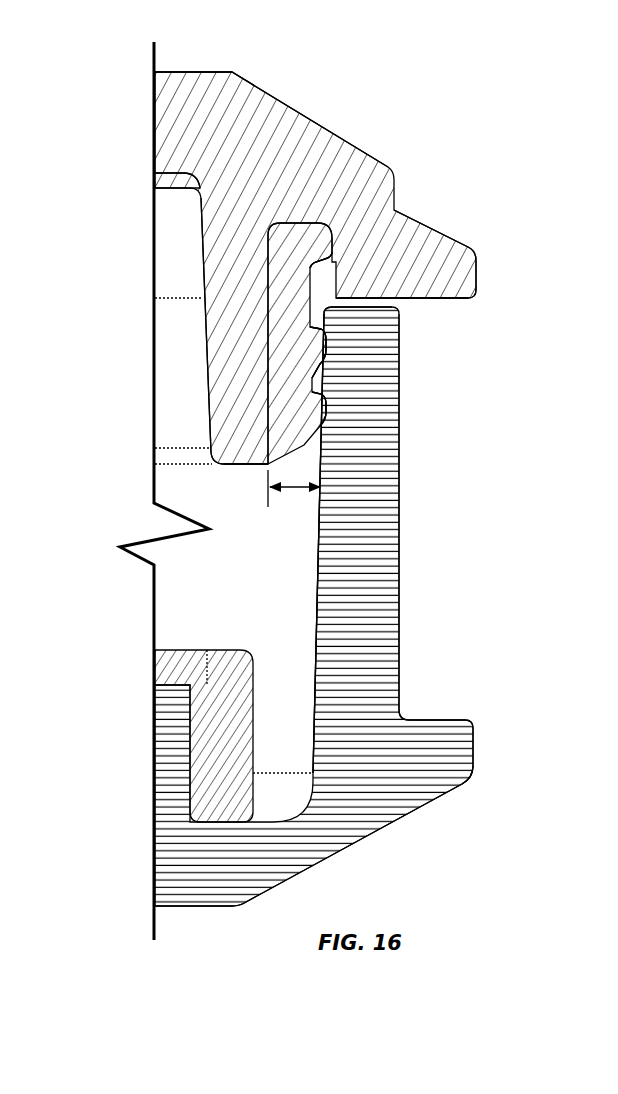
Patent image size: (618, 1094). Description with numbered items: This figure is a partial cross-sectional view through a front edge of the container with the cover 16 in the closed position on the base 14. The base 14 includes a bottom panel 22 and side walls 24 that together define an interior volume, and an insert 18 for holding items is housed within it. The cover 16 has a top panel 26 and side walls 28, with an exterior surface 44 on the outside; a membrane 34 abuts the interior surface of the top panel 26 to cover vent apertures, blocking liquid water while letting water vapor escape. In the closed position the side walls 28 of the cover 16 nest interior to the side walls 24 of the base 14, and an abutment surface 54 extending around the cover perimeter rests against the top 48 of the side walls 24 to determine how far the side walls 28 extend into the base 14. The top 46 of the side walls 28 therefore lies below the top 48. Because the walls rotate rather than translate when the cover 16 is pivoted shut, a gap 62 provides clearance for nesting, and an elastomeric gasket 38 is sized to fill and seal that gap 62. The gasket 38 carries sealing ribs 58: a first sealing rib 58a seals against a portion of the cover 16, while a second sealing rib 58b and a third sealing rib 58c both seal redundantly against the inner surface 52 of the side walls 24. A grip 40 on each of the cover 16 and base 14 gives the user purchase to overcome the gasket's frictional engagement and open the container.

The base 14 is at (403, 588).
The cover 16 is at (273, 91).
The insert 18 is at (220, 762).
The bottom panel 22 is at (192, 884).
The side wall 24 is at (372, 524).
The top panel 26 is at (178, 118).
The side wall 28 is at (239, 345).
The membrane 34 is at (166, 177).
The gasket 38 is at (296, 249).
The grip 40 is at (453, 274).
The exterior surface 44 is at (187, 69).
The top of cover side walls 46 is at (243, 467).
The top of base side walls 48 is at (379, 297).
The inner surface 52 is at (318, 540).
The abutment surface 54 is at (349, 306).
The sealing rib 58 is at (321, 339).
The first sealing rib 58a is at (330, 262).
The second sealing rib 58b is at (327, 358).
The third sealing rib 58c is at (327, 420).
The gap 62 is at (296, 495).